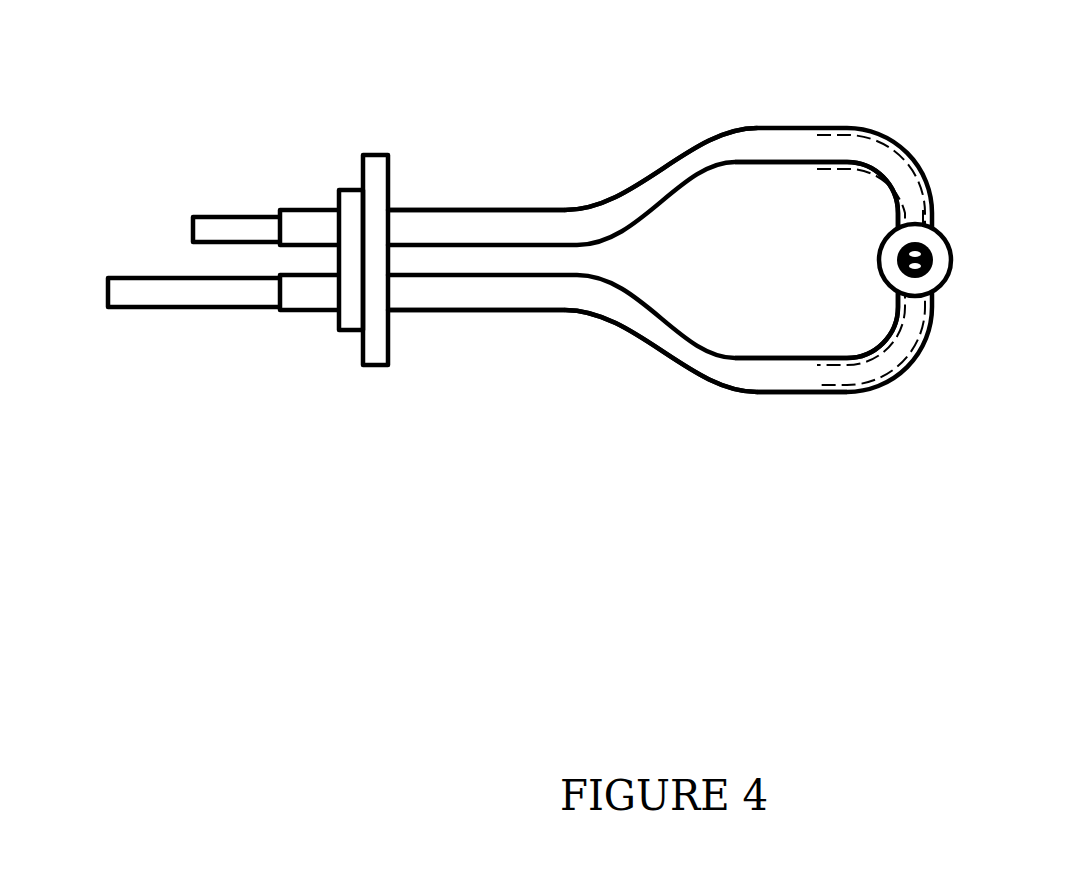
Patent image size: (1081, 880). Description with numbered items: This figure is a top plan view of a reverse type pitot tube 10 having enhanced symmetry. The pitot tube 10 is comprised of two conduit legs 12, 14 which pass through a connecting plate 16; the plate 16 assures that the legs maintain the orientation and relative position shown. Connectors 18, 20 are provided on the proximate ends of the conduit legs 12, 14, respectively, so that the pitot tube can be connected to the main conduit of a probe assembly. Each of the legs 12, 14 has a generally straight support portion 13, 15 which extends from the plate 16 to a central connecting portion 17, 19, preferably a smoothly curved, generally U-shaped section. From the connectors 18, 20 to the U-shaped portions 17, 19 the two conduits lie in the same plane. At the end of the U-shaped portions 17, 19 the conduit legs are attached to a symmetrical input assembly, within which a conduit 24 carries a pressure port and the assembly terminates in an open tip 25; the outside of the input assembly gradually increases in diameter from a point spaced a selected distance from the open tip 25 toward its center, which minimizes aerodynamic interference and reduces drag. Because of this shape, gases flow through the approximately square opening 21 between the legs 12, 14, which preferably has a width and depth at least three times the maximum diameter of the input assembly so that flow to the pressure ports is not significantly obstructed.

The pitot tube 10 is at (780, 128).
The conduit leg 12 is at (635, 175).
The support portion 13 is at (433, 210).
The conduit leg 14 is at (625, 330).
The support portion 15 is at (452, 310).
The connecting plate 16 is at (377, 365).
The central connecting portion 17 is at (775, 162).
The connector 18 is at (218, 217).
The central connecting portion 19 is at (777, 393).
The connector 20 is at (197, 307).
The opening 21 is at (818, 291).
The conduit 24 is at (946, 283).
The open tip 25 is at (934, 208).